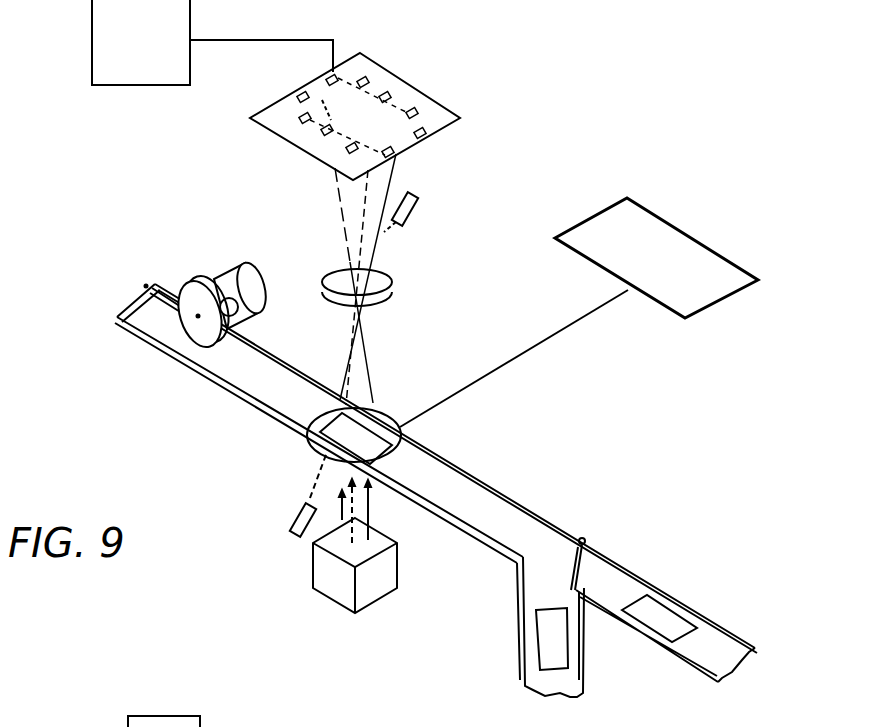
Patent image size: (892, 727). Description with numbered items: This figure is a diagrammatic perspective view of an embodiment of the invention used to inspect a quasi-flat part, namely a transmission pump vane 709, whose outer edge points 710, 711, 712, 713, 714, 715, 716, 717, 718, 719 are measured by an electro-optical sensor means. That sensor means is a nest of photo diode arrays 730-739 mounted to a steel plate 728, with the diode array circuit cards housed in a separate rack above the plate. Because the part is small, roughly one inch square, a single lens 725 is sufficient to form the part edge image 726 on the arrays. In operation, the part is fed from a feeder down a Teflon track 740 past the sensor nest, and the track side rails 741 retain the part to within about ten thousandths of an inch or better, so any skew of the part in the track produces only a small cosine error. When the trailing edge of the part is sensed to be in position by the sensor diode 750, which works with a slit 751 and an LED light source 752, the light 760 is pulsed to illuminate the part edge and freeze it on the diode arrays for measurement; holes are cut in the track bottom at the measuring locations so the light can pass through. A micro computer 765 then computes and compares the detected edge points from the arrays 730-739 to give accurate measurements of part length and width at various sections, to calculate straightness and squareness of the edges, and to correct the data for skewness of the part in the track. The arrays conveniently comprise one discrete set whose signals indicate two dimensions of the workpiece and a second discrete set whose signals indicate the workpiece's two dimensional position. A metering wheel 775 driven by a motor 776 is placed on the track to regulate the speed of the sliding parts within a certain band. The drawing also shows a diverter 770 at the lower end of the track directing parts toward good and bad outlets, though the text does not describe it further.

The transmission pump vane 709 is at (378, 448).
The outer edge point 710 is at (650, 203).
The outer edge point 711 is at (688, 230).
The outer edge point 712 is at (733, 256).
The outer edge point 713 is at (740, 290).
The outer edge point 714 is at (708, 310).
The outer edge point 715 is at (660, 308).
The outer edge point 716 is at (612, 279).
The outer edge point 717 is at (573, 254).
The outer edge point 718 is at (575, 225).
The outer edge point 719 is at (608, 207).
The lens 725 is at (393, 288).
The part edge image 726 is at (432, 118).
The steel plate 728 is at (378, 62).
The photo diode arrays 730-739 is at (463, 130).
The Teflon track 740 is at (225, 367).
The track side rails 741 is at (162, 290).
The sensor diode 750 is at (418, 205).
The slit 751 is at (412, 228).
The LED light source 752 is at (293, 520).
The light 760 is at (387, 580).
The micro computer 765 is at (164, 42).
The diverter gate 770 is at (584, 545).
The metering wheel 775 is at (222, 330).
The motor 776 is at (243, 272).